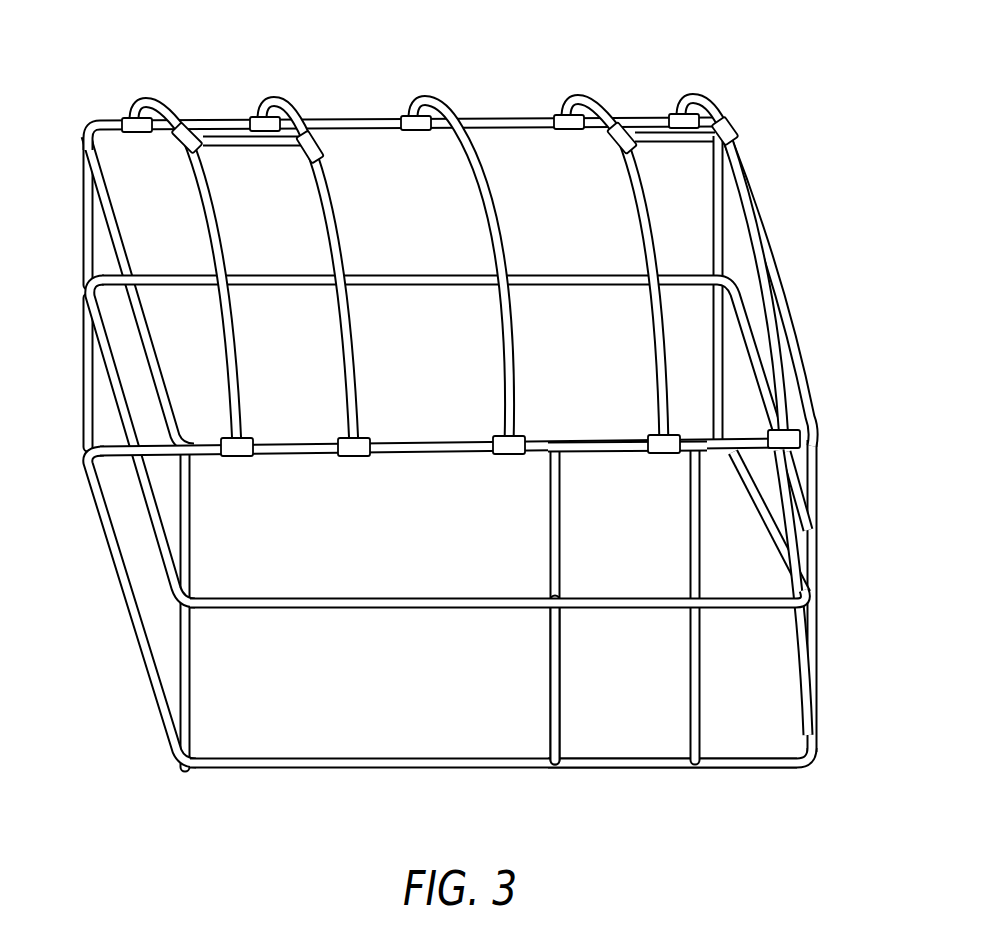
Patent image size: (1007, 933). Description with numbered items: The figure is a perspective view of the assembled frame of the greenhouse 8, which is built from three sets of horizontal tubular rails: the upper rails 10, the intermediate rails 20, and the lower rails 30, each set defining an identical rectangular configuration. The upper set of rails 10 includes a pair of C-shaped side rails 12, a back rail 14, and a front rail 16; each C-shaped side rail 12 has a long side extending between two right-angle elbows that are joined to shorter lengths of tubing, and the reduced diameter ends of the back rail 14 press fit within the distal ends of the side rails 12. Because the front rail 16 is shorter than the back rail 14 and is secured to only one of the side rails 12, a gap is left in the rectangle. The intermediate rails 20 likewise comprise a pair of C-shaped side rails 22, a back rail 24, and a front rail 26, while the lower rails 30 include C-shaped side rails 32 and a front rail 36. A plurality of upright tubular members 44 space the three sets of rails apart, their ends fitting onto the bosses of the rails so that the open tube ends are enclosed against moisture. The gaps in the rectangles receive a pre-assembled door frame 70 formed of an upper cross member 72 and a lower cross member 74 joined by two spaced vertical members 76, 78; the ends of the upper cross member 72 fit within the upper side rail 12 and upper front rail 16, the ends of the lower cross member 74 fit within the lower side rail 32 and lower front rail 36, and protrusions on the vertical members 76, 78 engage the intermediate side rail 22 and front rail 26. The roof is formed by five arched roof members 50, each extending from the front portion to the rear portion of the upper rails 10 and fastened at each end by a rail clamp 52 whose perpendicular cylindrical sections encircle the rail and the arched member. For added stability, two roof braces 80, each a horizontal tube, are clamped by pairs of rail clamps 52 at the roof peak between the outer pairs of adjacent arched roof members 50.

The greenhouse 8 is at (99, 86).
The upper rails 10 is at (835, 390).
The C-shaped side rails 12 is at (84, 206).
The back rail 14 is at (332, 120).
The front rail 16 is at (410, 455).
The intermediate rails 20 is at (835, 548).
The C-shaped side rails 22 is at (113, 385).
The back rail 24 is at (376, 275).
The front rail 26 is at (386, 605).
The lower rails 30 is at (835, 746).
The C-shaped side rails 32 is at (124, 608).
The front rail 36 is at (402, 765).
The upright tubular members 44 is at (722, 194).
The arched roof members 50 is at (223, 236).
The rail clamp 52 is at (131, 112).
The door frame 70 is at (559, 552).
The upper cross member 72 is at (612, 455).
The lower cross member 74 is at (620, 768).
The vertical member 76 is at (560, 668).
The vertical member 78 is at (690, 578).
The roof brace 80 is at (252, 146).